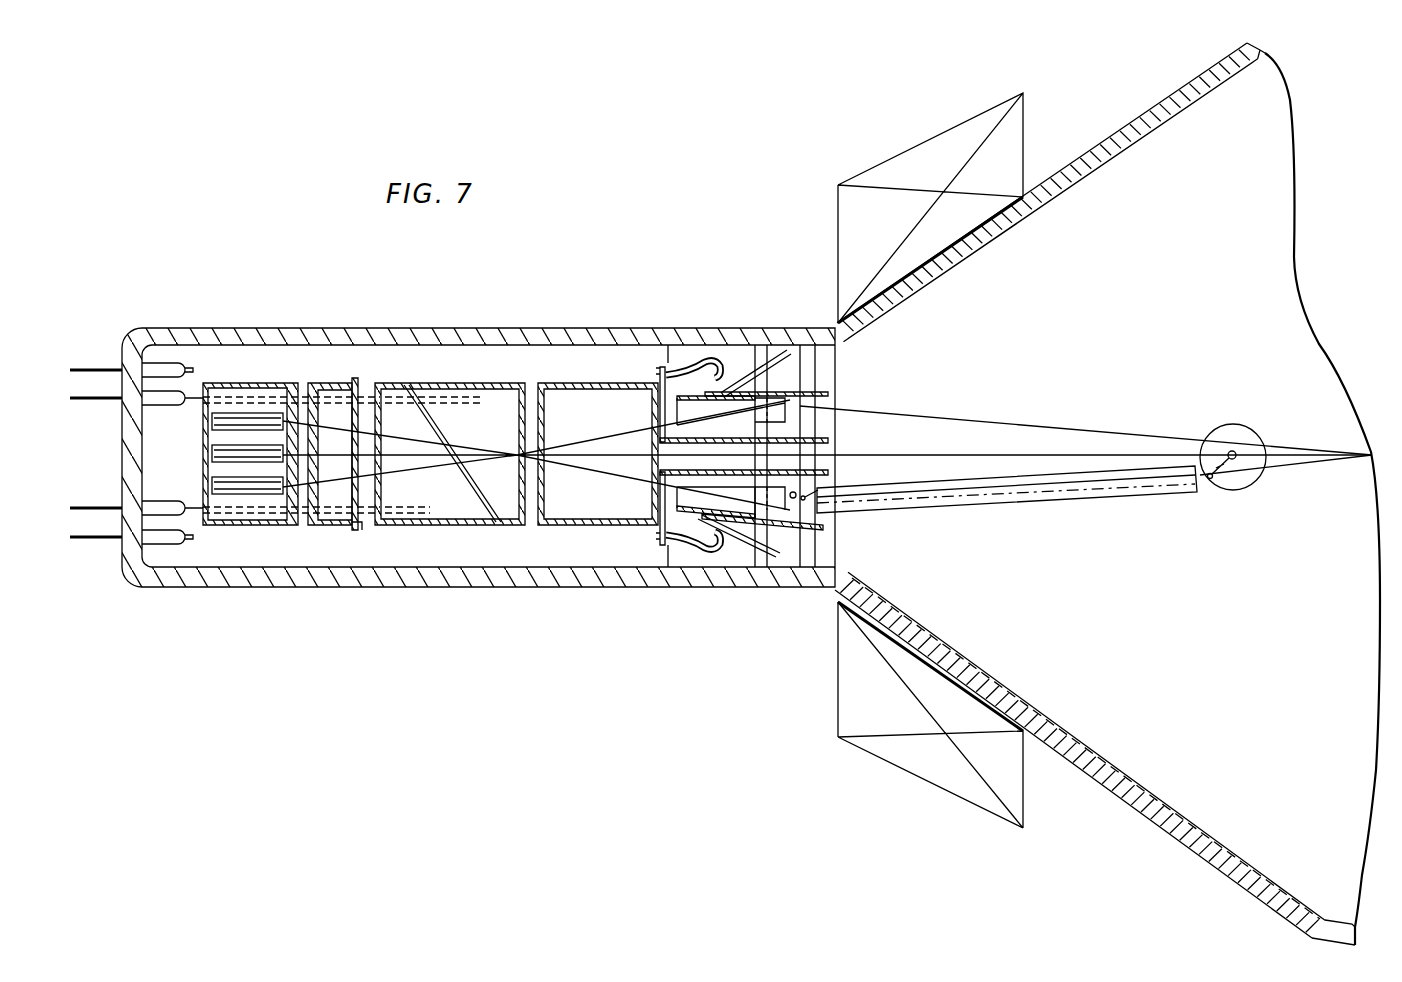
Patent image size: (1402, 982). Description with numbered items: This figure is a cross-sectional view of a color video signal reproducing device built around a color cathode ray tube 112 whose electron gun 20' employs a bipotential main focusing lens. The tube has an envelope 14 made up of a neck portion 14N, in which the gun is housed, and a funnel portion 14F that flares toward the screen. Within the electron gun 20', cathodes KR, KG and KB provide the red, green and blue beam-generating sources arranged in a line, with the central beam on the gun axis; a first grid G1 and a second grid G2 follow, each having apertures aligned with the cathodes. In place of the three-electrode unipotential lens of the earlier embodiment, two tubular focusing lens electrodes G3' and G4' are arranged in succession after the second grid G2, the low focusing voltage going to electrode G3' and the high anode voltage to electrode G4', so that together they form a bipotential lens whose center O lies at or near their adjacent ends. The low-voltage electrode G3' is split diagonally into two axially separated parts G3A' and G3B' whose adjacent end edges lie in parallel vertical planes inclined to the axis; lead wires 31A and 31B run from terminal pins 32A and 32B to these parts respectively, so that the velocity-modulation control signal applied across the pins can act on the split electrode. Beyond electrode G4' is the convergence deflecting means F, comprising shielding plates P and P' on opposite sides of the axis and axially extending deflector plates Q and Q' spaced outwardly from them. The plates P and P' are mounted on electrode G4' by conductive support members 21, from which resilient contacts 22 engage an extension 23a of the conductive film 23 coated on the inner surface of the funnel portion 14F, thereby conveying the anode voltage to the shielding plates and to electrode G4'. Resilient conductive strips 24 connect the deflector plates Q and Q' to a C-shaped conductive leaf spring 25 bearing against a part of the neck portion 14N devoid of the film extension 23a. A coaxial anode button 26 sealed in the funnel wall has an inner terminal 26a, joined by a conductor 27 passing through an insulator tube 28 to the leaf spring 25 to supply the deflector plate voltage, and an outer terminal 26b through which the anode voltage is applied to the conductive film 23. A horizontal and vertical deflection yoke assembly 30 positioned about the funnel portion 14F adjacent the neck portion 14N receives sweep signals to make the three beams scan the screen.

The envelope 14 is at (600, 590).
The neck portion 14N is at (228, 588).
The funnel portion 14F is at (1182, 825).
The terminal pin 32A is at (70, 507).
The terminal pin 32B is at (67, 403).
The electron gun 20' is at (298, 581).
The cathode KR is at (250, 420).
The cathode KG is at (220, 452).
The cathode KB is at (220, 483).
The first grid G1 is at (282, 388).
The second grid G2 is at (326, 388).
The lead wire 31A is at (368, 512).
The lead wire 31B is at (367, 398).
The focusing lens electrode G3' is at (450, 406).
The electrode part G3A' is at (435, 552).
The electrode part G3B' is at (541, 552).
The lens center O is at (499, 479).
The focusing lens electrode G4' is at (598, 433).
The color cathode ray tube 112 is at (580, 290).
The conductive support member 21 is at (660, 407).
The conductive resilient contact 22 is at (700, 365).
The deflector plate Q is at (798, 391).
The shielding plate P is at (769, 438).
The shielding plate P' is at (771, 473).
The deflector plate Q' is at (787, 540).
The film extension 23a is at (738, 553).
The resilient conductive strip 24 is at (755, 560).
The C-shaped conductive leaf spring 25 is at (800, 560).
The convergence deflecting means F is at (832, 370).
The insulator tube 28 is at (945, 514).
The conductor 27 is at (1133, 490).
The coaxial anode button 26 is at (1212, 425).
The inner terminal 26a is at (1236, 460).
The outer terminal 26b is at (1250, 430).
The conductive film 23 is at (1182, 770).
The horizontal and vertical deflection yoke assembly 30 is at (950, 780).